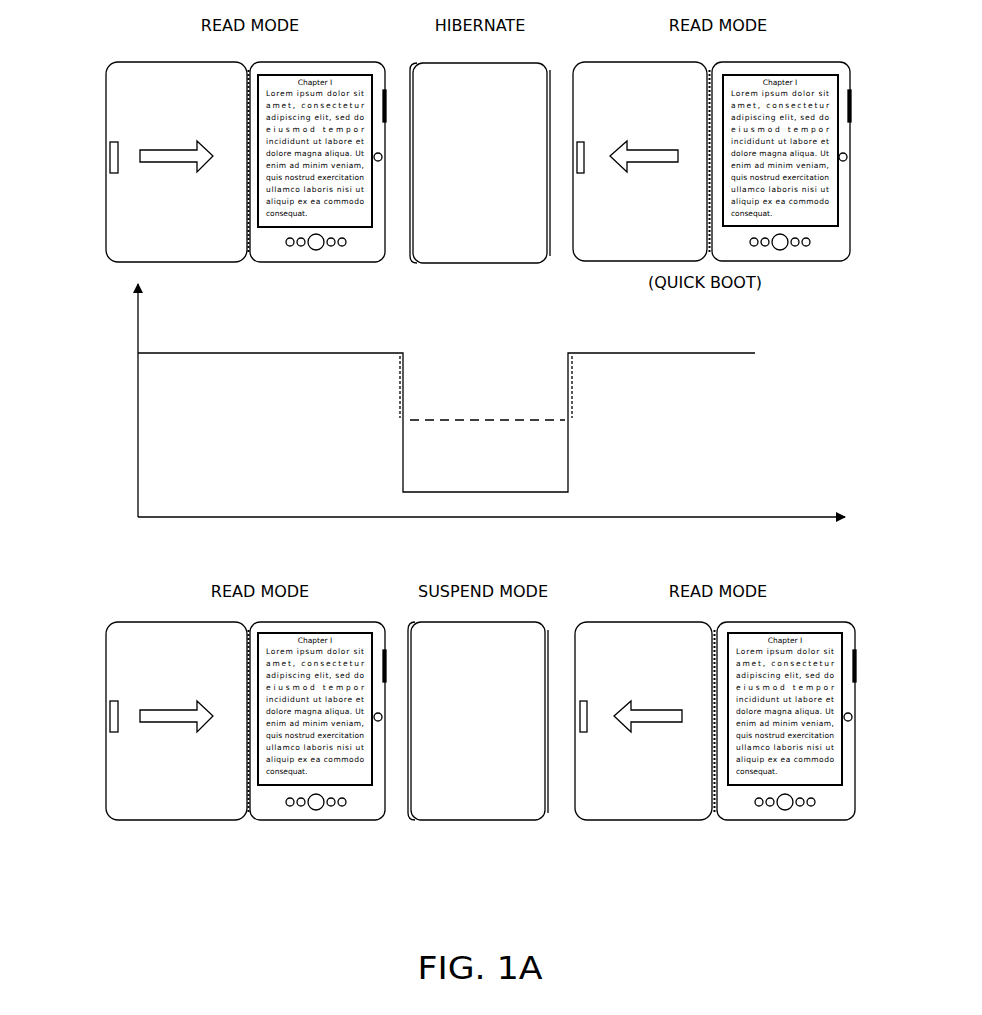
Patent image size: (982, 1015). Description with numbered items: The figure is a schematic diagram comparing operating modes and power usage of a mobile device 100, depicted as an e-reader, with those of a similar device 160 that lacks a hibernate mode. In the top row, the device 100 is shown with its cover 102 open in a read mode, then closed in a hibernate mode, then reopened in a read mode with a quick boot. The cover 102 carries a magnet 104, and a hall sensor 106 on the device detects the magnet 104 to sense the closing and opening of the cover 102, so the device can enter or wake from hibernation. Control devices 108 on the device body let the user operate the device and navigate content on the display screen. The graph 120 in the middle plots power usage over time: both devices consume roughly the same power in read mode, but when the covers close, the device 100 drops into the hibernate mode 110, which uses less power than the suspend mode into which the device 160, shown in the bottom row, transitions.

The mobile device 100 is at (92, 113).
The cover 102 is at (211, 62).
The magnet 104 is at (110, 157).
The hall sensor 106 is at (379, 162).
The control device 108 is at (307, 251).
The hibernate mode 110 is at (403, 470).
The graph 120 is at (774, 350).
The device without hibernate mode 160 is at (92, 679).